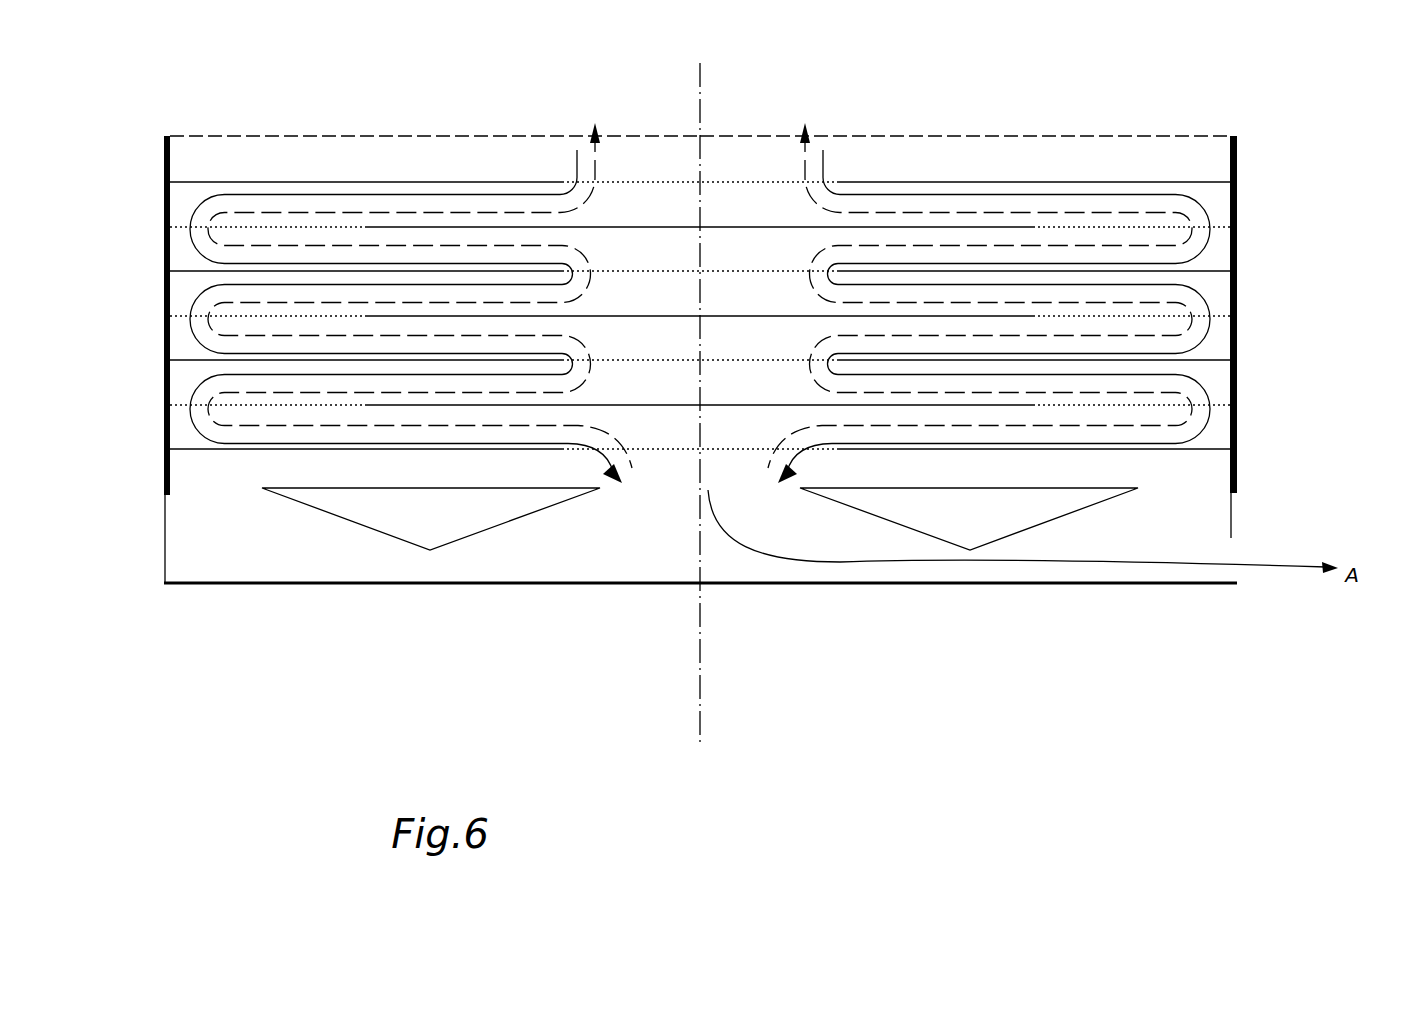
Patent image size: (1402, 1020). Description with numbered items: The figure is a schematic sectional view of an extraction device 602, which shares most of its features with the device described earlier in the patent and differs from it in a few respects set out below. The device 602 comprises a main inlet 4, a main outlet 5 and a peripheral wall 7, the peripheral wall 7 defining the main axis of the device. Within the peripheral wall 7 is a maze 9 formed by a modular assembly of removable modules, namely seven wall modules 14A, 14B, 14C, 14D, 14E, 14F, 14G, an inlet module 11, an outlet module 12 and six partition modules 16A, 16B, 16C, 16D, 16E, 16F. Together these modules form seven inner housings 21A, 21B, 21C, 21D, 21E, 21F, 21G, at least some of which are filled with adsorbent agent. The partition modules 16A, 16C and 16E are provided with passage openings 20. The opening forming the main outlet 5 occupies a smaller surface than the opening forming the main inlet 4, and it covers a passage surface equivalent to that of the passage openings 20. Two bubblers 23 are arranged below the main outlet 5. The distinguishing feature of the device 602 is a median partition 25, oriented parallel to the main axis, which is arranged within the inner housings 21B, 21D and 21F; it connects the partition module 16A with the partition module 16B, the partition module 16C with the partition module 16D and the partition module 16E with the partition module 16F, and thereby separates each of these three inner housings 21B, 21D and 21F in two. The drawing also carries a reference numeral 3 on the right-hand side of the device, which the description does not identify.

The extraction device 602 is at (186, 111).
The passage openings 20 is at (270, 220).
The maze 9 is at (893, 224).
The main inlet 4 is at (1013, 126).
The inlet module 11 is at (1133, 136).
The wall module 14A is at (1237, 162).
The wall module 14B is at (1237, 205).
The wall module 14C is at (1237, 258).
The wall module 14D is at (1237, 297).
The wall module 14E is at (1237, 346).
The wall module 14F is at (1237, 381).
The wall module 14G is at (1237, 430).
The peripheral wall 7 is at (1250, 232).
The side wall 3 is at (1237, 480).
The partition module 16A is at (170, 182).
The partition module 16B is at (170, 227).
The partition module 16C is at (170, 271).
The partition module 16D is at (170, 316).
The partition module 16E is at (170, 360).
The partition module 16F is at (170, 405).
The inner housing 21A is at (700, 165).
The inner housing 21B is at (700, 210).
The inner housing 21C is at (700, 252).
The inner housing 21D is at (700, 297).
The inner housing 21E is at (700, 341).
The inner housing 21F is at (700, 386).
The inner housing 21G is at (700, 430).
The bubbler 23 is at (700, 519).
The median partition 25 is at (700, 293).
The main outlet 5 is at (686, 457).
The outlet module 12 is at (1162, 450).